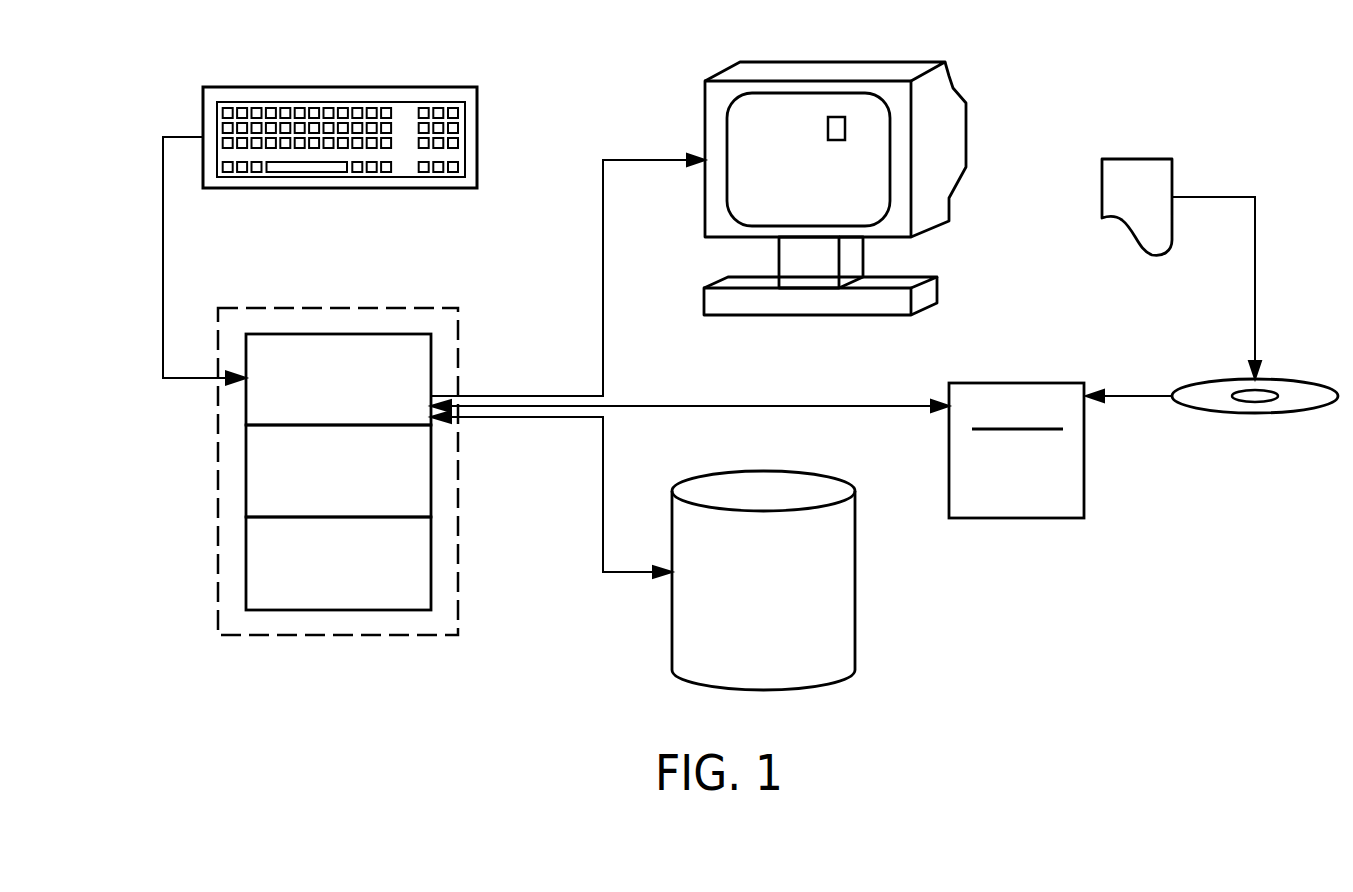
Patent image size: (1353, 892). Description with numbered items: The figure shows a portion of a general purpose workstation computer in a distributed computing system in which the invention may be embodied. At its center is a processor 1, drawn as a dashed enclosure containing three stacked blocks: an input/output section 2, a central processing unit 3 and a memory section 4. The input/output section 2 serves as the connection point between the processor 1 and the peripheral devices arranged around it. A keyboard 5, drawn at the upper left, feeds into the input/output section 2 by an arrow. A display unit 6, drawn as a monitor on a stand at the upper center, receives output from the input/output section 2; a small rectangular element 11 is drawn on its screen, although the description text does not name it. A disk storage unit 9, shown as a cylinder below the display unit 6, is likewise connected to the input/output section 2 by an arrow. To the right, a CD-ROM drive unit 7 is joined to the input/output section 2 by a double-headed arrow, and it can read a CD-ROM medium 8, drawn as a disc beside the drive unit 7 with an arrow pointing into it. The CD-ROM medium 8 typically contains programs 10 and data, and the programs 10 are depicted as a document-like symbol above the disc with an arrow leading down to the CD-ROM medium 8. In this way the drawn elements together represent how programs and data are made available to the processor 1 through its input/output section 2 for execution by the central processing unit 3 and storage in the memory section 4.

The processor 1 is at (402, 306).
The Input/output section 2 is at (275, 346).
The central processing unit 3 is at (413, 495).
The memory section 4 is at (413, 592).
The keyboard 5 is at (478, 140).
The display unit 6 is at (704, 127).
The CD-ROM drive unit 7 is at (1013, 383).
The CD-ROM medium 8 is at (1210, 383).
The disk storage unit 9 is at (855, 577).
The programs 10 is at (1100, 185).
The cursor 11 is at (841, 116).